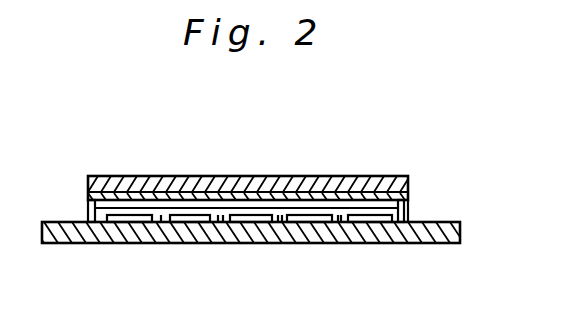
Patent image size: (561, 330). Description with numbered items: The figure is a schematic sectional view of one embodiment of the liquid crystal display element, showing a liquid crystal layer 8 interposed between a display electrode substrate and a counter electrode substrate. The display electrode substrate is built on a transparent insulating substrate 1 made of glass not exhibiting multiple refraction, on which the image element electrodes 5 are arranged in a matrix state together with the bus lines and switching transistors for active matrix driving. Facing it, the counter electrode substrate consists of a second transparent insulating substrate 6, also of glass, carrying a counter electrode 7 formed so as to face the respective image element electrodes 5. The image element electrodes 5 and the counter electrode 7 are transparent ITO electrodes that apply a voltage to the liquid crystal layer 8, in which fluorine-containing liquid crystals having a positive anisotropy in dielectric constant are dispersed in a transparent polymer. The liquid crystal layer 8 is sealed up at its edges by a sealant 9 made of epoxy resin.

The transparent insulating substrate 1 is at (102, 243).
The image element electrodes 5 is at (139, 223).
The transparent insulating substrate 6 is at (328, 176).
The counter electrode 7 is at (410, 203).
The liquid crystal layer 8 is at (102, 211).
The sealant 9 is at (89, 199).